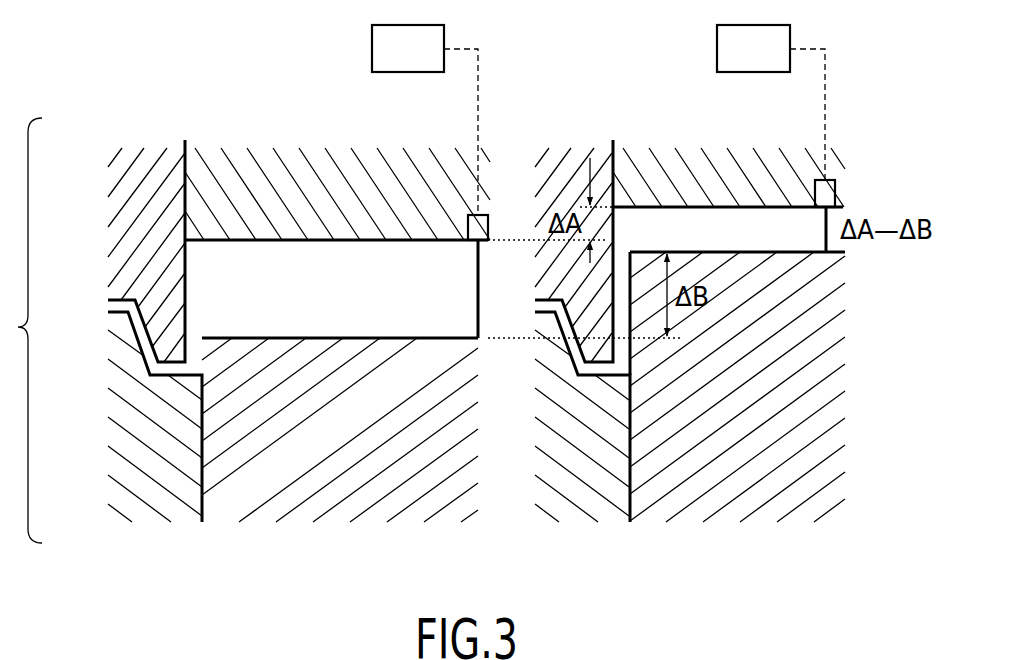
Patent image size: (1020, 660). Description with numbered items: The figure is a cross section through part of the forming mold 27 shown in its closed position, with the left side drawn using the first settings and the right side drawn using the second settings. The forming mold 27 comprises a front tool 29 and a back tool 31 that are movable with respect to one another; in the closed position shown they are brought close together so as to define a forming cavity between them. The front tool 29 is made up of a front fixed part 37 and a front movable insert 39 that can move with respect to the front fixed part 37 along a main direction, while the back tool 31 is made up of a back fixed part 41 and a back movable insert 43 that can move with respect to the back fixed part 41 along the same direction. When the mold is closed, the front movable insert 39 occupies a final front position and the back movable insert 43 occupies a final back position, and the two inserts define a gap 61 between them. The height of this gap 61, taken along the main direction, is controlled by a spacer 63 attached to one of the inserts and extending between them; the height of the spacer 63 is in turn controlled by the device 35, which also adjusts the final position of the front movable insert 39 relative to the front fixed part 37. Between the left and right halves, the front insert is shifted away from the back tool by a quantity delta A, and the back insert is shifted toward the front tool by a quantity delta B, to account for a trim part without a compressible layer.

The forming mold 27 is at (124, 134).
The front tool 29 is at (145, 192).
The back tool 31 is at (108, 372).
The device 35 is at (598, 119).
The front fixed part 37 is at (145, 226).
The front movable insert 39 is at (370, 233).
The back fixed part 41 is at (140, 433).
The back movable insert 43 is at (298, 378).
The gap 61 is at (522, 264).
The spacer 63 is at (478, 265).